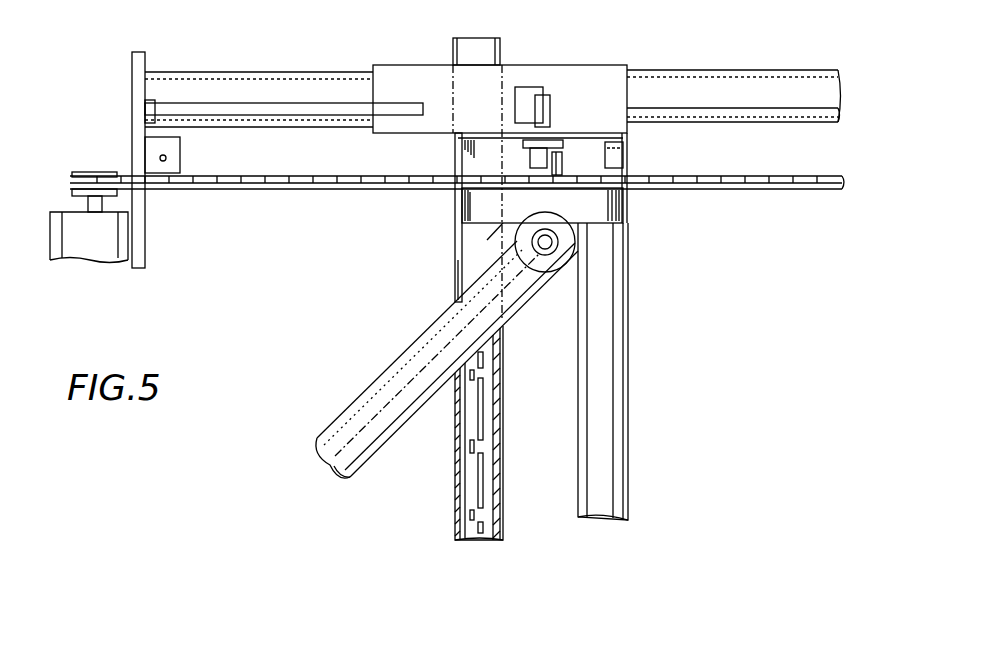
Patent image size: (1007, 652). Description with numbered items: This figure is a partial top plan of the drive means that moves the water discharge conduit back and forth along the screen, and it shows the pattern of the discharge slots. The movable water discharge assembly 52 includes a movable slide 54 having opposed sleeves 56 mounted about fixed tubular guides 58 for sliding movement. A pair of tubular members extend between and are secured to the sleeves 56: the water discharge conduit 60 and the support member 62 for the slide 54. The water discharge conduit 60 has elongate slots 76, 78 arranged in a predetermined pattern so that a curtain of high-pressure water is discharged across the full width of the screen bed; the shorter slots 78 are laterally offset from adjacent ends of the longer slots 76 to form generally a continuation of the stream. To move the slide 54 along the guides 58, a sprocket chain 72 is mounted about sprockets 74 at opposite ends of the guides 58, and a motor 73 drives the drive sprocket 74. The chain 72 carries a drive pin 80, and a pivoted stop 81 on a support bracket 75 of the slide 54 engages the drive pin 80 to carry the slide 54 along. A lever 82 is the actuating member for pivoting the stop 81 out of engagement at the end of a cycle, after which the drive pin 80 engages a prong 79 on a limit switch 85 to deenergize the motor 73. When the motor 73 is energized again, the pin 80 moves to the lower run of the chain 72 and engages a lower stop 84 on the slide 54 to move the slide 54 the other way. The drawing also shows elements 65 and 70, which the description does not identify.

The water discharge assembly 52 is at (445, 287).
The movable slide 54 is at (458, 212).
The sleeves 56 is at (607, 85).
The fixed tubular guides 58 is at (737, 83).
The water discharge conduit 60 is at (455, 528).
The support member 62 is at (625, 458).
The inclined arm 65 is at (377, 383).
The pulley 70 is at (545, 247).
The sprocket chain 72 is at (240, 183).
The motor 73 is at (78, 247).
The sprockets 74 is at (80, 174).
The support bracket 75 is at (607, 142).
The elongate slots 76 is at (484, 360).
The elongate slots 78 is at (470, 378).
The prong 79 is at (167, 160).
The drive pin 80 is at (563, 162).
The pivoted stop 81 is at (408, 103).
The lever 82 is at (525, 87).
The lower stop 84 is at (617, 153).
The limit switch 85 is at (152, 147).